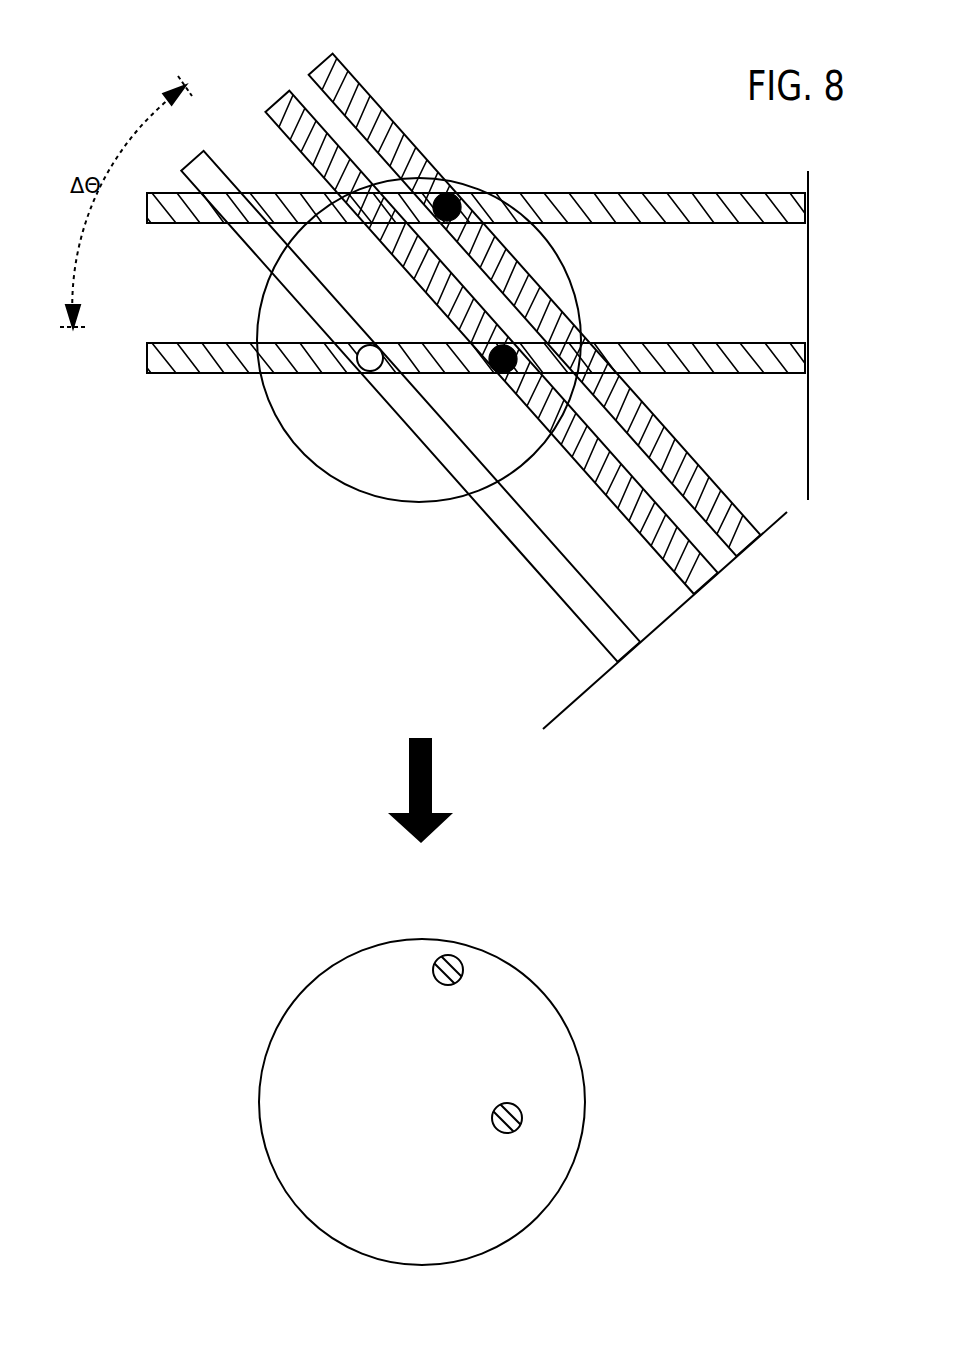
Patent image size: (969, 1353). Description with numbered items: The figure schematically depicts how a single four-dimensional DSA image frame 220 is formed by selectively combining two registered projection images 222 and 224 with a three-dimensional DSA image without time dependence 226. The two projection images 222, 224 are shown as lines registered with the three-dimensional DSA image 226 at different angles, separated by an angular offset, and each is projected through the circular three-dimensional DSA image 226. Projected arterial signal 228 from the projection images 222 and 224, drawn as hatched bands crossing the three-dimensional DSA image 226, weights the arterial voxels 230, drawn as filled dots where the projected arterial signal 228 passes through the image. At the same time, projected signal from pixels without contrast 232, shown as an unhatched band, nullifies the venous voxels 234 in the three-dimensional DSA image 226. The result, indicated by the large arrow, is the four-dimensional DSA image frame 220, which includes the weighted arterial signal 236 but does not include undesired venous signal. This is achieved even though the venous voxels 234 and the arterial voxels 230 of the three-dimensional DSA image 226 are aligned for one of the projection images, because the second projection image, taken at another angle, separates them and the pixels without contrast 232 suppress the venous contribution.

The 4D-DSA image frame 220 is at (500, 958).
The registered projection image 222 is at (812, 467).
The registered projection image 224 is at (595, 688).
The 3D-DSA image without time dependence 226 is at (312, 460).
The projected arterial signal 228 is at (745, 226).
The arterial voxels 230 is at (455, 196).
The pixels without contrast 232 is at (520, 556).
The venous voxels 234 is at (363, 376).
The weighted arterial signal 236 is at (443, 985).